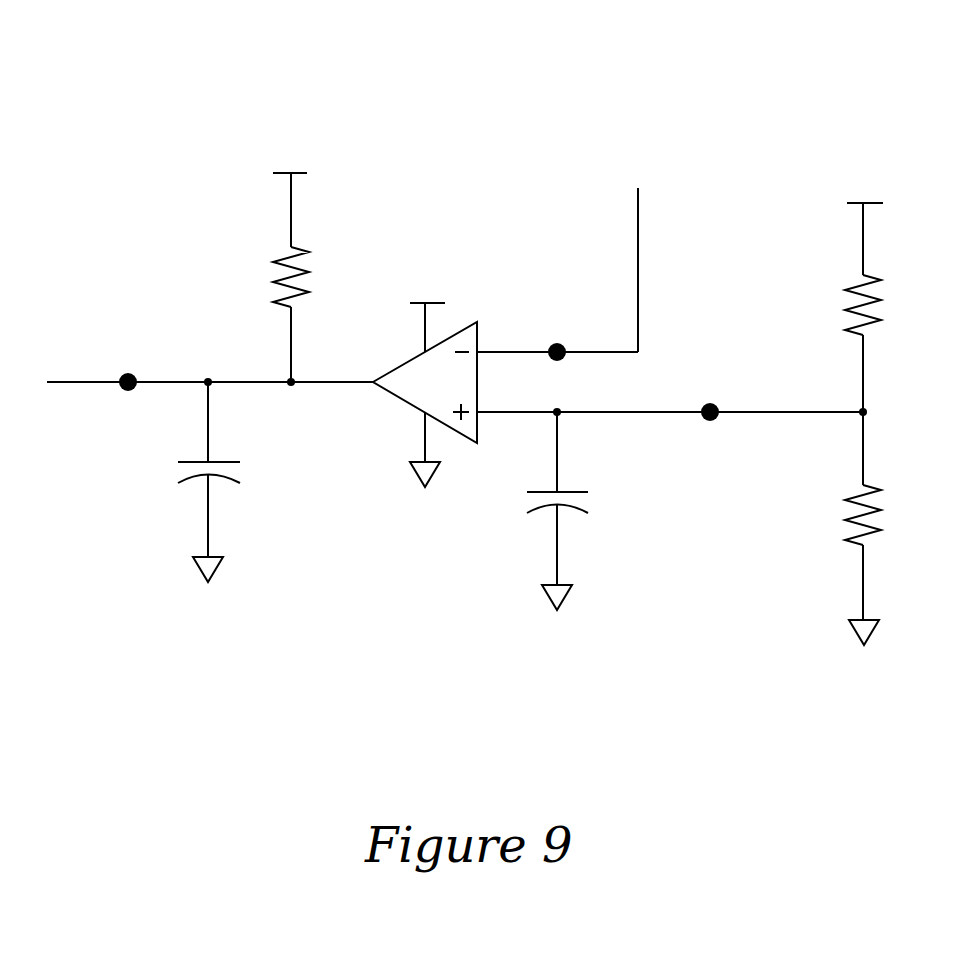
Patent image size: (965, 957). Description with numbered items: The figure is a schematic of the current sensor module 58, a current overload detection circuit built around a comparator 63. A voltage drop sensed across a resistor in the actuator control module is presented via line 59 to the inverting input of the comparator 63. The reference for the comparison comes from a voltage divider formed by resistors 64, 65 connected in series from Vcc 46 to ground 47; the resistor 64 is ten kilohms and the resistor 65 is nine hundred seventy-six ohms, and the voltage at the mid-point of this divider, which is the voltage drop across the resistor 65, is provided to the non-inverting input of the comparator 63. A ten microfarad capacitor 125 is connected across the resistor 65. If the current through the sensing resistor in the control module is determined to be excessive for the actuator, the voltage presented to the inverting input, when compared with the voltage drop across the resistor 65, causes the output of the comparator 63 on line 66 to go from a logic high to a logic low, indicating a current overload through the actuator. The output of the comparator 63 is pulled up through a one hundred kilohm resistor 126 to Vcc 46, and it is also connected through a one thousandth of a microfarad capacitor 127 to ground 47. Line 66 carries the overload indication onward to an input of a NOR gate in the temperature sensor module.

The current sensor module 58 is at (571, 115).
The Vcc 46 is at (273, 173).
The ground 47 is at (200, 565).
The resistor 126 is at (273, 282).
The line 66 is at (124, 374).
The comparator 63 is at (400, 368).
The line 59 is at (638, 233).
The resistor 64 is at (845, 313).
The resistor 65 is at (850, 524).
The capacitor 127 is at (238, 470).
The capacitor 125 is at (585, 498).